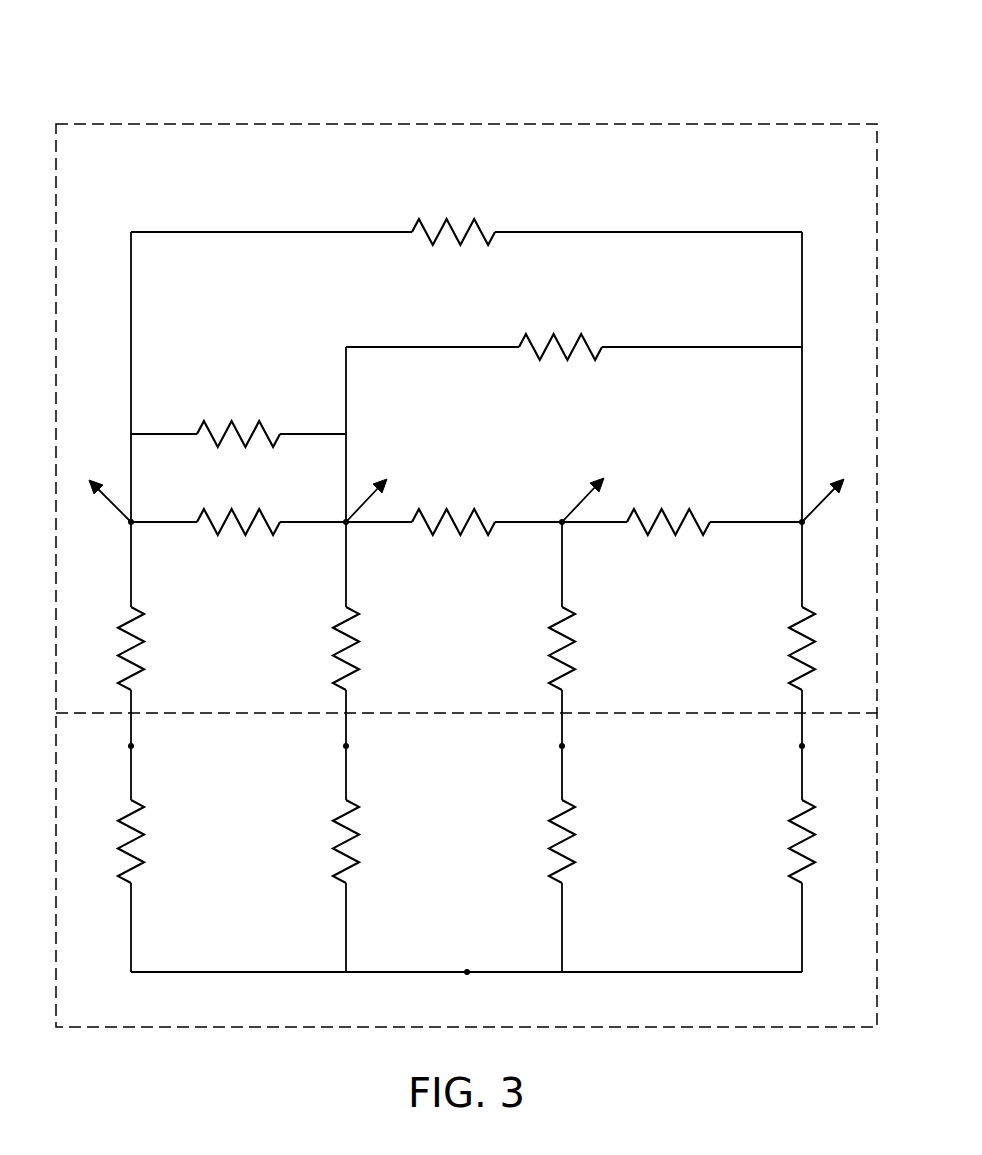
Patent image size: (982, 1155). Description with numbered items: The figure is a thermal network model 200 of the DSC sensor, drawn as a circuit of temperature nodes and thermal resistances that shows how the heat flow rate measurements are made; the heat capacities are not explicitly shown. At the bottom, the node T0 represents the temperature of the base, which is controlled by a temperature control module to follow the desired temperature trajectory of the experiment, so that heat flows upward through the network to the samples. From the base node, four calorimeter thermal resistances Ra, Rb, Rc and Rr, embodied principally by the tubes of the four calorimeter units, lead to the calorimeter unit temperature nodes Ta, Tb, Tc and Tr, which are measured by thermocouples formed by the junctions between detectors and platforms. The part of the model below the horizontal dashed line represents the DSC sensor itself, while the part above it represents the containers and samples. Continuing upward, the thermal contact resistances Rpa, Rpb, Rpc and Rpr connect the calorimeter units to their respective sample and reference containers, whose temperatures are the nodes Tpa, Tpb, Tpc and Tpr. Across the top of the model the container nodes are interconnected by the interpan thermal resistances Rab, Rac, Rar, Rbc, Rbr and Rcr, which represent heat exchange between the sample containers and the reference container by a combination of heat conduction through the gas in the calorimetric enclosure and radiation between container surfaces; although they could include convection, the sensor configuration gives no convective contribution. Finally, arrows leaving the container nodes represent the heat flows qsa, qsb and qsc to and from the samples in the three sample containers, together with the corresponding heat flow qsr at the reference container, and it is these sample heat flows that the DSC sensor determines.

The thermal network model 200 is at (461, 517).
The interpan thermal resistance Rar is at (453, 215).
The interpan thermal resistance Rbr is at (560, 328).
The interpan thermal resistance Rac is at (238, 415).
The interpan thermal resistance Rab is at (238, 502).
The interpan thermal resistance Rbc is at (453, 502).
The interpan thermal resistance Rcr is at (668, 502).
The thermal contact resistance Rpa is at (114, 648).
The thermal contact resistance Rpb is at (329, 648).
The thermal contact resistance Rpc is at (545, 648).
The thermal contact resistance Rpr is at (786, 648).
The calorimeter thermal resistance Ra is at (118, 841).
The calorimeter thermal resistance Rb is at (333, 841).
The calorimeter thermal resistance Rc is at (549, 841).
The calorimeter thermal resistance Rr is at (790, 841).
The sample container temperature Tpa is at (146, 503).
The sample container temperature Tpb is at (332, 503).
The sample container temperature Tpc is at (547, 503).
The reference container temperature Tpr is at (788, 503).
The calorimeter unit temperature Ta is at (120, 744).
The calorimeter unit temperature Tb is at (335, 744).
The calorimeter unit temperature Tc is at (550, 744).
The reference calorimeter unit temperature Tr is at (791, 744).
The base temperature T0 is at (467, 954).
The sample heat flow qsa is at (106, 484).
The sample heat flow qsb is at (371, 484).
The sample heat flow qsc is at (586, 484).
The reference heat flow qsr is at (825, 484).